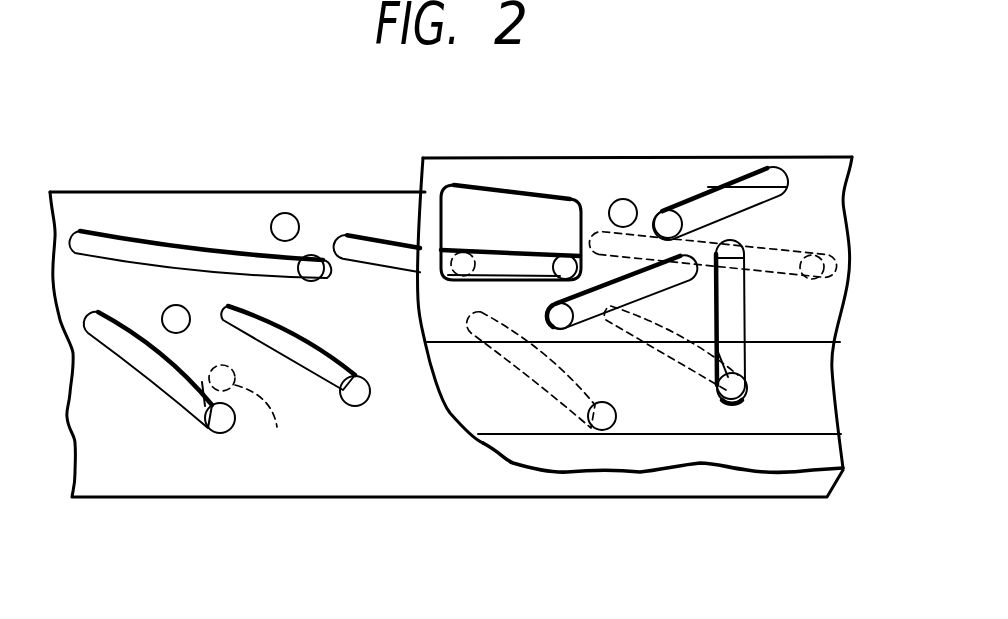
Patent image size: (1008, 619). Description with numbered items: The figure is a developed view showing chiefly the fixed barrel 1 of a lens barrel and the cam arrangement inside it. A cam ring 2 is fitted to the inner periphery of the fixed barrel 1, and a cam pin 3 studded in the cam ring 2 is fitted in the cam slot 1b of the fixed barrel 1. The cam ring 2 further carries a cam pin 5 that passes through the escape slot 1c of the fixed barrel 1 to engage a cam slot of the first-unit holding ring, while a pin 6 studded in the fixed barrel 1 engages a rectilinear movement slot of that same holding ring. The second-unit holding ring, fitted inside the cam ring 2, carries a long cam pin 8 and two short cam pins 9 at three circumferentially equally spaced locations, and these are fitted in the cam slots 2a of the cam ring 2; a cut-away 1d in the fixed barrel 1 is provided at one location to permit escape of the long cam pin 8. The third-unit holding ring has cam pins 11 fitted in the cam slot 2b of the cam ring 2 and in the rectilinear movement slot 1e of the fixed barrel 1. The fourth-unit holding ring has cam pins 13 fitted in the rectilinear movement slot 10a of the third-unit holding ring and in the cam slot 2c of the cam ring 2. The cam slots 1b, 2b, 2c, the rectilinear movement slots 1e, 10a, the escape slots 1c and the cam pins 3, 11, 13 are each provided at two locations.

The fixed barrel 1 is at (820, 165).
The cam slot 1b is at (673, 283).
The escape slot 1c is at (740, 183).
The cut-away 1d is at (563, 208).
The rectilinear movement slot 1e is at (742, 322).
The cam ring 2 is at (363, 202).
The cam slots 2a is at (195, 255).
The cam slot 2b is at (336, 354).
The cam slot 2c is at (163, 375).
The cam pin 3 is at (165, 312).
The cam pin 5 is at (288, 222).
The pin 6 is at (624, 210).
The cam pin 8 is at (458, 285).
The cam pins 9 is at (320, 278).
The rectilinear movement slot 10a is at (251, 413).
The cam pins 11 is at (363, 406).
The cam pins 13 is at (212, 432).